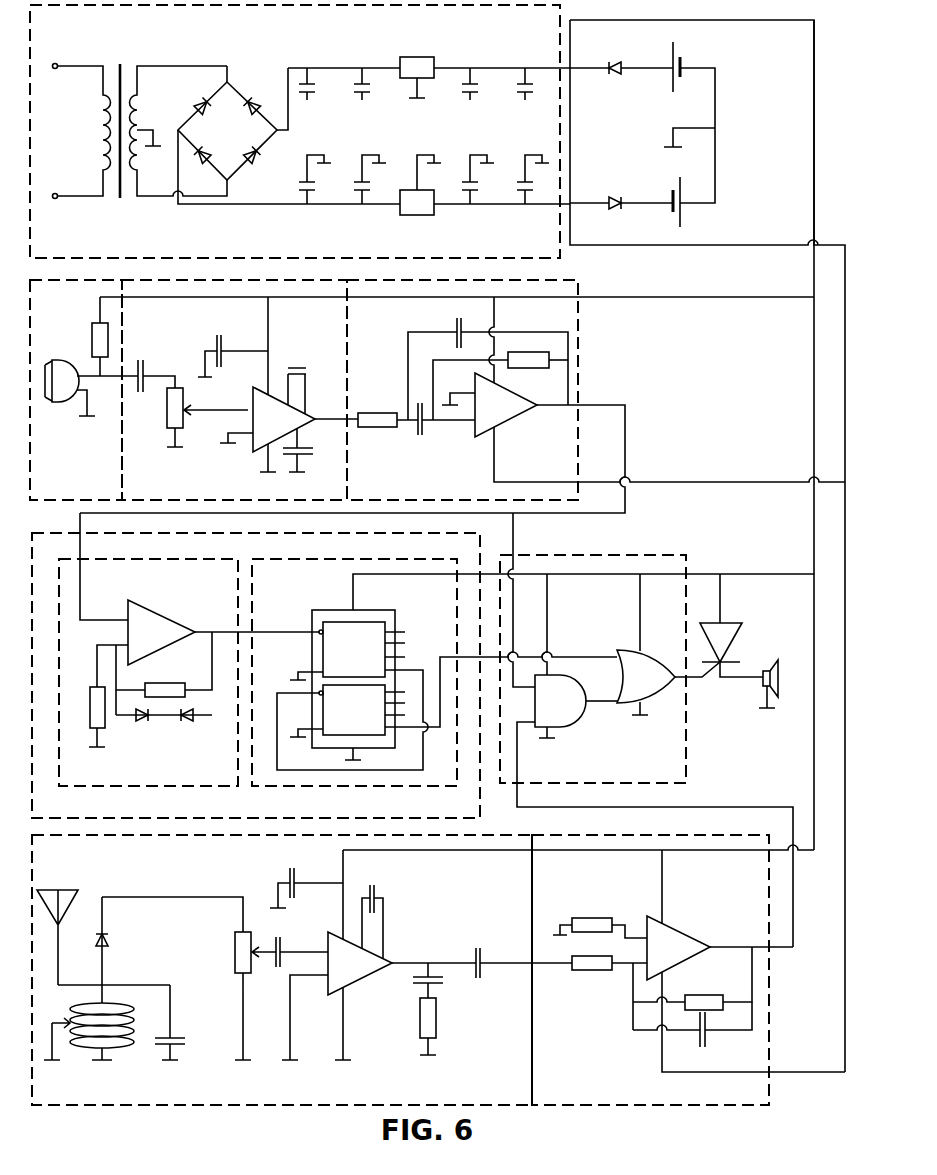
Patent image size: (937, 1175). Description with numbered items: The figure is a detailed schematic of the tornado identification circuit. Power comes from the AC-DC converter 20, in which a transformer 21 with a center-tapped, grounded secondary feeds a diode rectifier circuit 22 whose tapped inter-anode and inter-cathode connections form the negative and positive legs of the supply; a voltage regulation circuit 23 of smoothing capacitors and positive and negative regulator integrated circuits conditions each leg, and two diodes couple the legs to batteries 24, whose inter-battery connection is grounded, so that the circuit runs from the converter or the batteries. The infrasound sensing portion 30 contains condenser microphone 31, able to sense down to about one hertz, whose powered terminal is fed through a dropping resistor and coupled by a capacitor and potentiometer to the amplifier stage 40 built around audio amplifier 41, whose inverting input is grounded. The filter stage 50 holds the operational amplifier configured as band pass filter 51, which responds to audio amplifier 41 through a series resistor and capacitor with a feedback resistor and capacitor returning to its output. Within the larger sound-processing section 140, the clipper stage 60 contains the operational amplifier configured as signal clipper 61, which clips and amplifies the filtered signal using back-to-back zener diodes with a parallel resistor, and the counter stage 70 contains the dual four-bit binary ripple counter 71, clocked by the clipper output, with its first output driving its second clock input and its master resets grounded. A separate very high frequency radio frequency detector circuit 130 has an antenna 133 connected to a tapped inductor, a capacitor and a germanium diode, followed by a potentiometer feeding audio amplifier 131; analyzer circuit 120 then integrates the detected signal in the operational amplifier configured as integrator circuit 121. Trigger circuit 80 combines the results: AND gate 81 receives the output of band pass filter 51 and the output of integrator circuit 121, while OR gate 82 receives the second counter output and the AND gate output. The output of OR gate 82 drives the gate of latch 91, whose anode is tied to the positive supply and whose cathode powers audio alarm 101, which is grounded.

The AC-DC converter 20 is at (300, 131).
The transformer 21 is at (122, 63).
The rectifier circuit 22 is at (289, 136).
The voltage regulation circuit 23 is at (429, 136).
The batteries 24 is at (695, 226).
The sound pickup circuit 30 is at (84, 390).
The condenser microphone 31 is at (70, 388).
The first amplifier circuit 40 is at (457, 390).
The audio amplifier 41 is at (284, 420).
The second amplifier/filter circuit 50 is at (462, 396).
The operational amplifier configured as band pass filter 51 is at (505, 408).
The comparator circuit 60 is at (189, 672).
The operational amplifier configured as signal clipper 61 is at (160, 632).
The timer circuit 70 is at (533, 672).
The dual 4-bit binary ripple counter 71 is at (545, 672).
The trigger circuit 80 is at (646, 730).
The AND gate 81 is at (570, 660).
The OR gate 82 is at (664, 645).
The latch 91 is at (731, 625).
The audio alarm 101 is at (770, 663).
The analyzer circuit 120 is at (688, 970).
The integrator circuit 121 is at (678, 952).
The very high frequency radio frequency detector circuit 130 is at (423, 970).
The audio amplifier 131 is at (357, 961).
The antenna 133 is at (60, 891).
The detection and timing circuit 140 is at (423, 665).